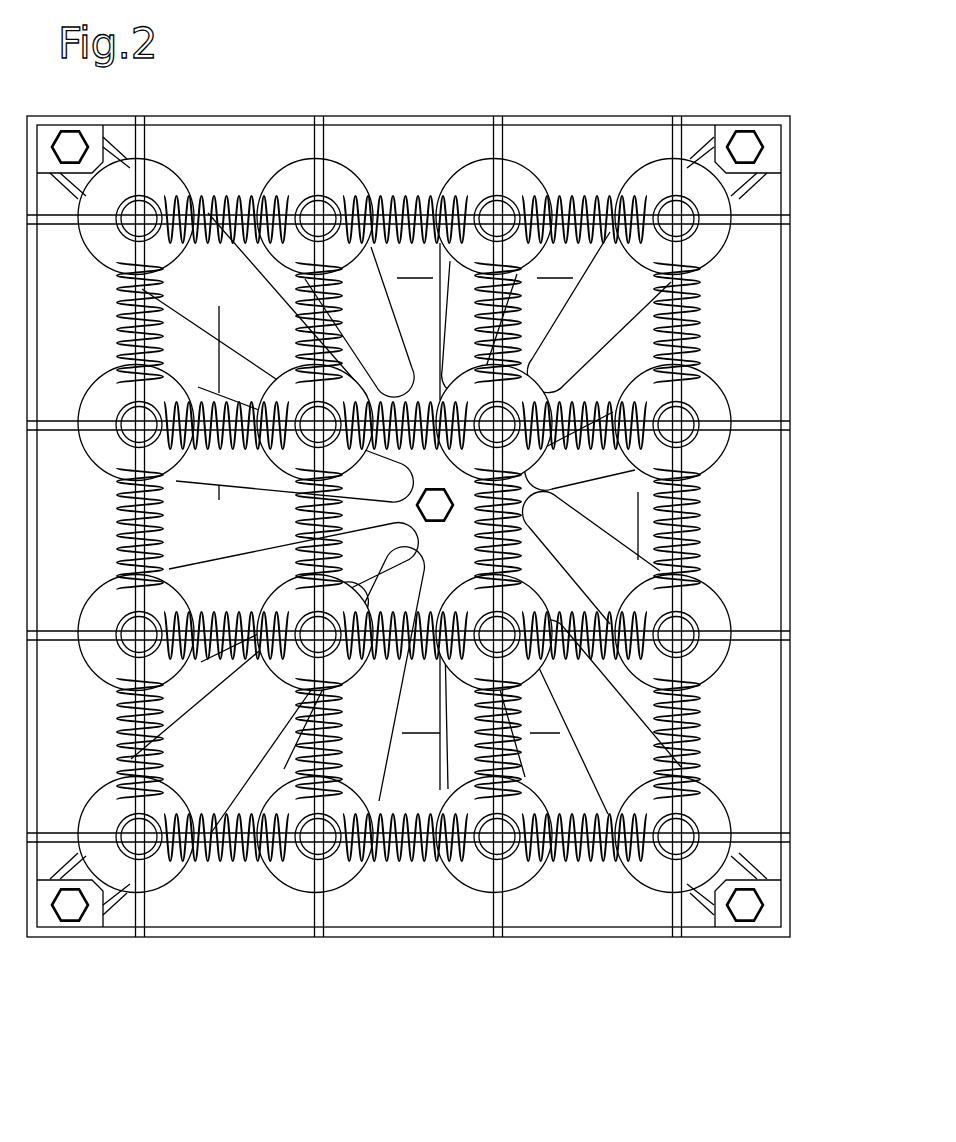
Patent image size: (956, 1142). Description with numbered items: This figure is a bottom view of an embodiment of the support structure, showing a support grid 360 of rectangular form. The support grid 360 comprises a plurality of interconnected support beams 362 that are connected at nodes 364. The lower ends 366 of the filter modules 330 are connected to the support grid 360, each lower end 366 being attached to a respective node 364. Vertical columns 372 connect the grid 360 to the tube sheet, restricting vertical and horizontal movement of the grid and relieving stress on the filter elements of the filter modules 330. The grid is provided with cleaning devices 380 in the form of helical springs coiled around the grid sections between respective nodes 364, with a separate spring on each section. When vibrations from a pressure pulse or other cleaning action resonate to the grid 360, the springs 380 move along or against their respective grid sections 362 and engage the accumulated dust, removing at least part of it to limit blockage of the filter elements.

The filter module 330 is at (630, 743).
The support grid 360 is at (572, 944).
The support beam 362 is at (393, 116).
The node 364 is at (287, 197).
The lower end 366 is at (612, 160).
The vertical column 372 is at (745, 866).
The cleaning device 380 is at (302, 712).